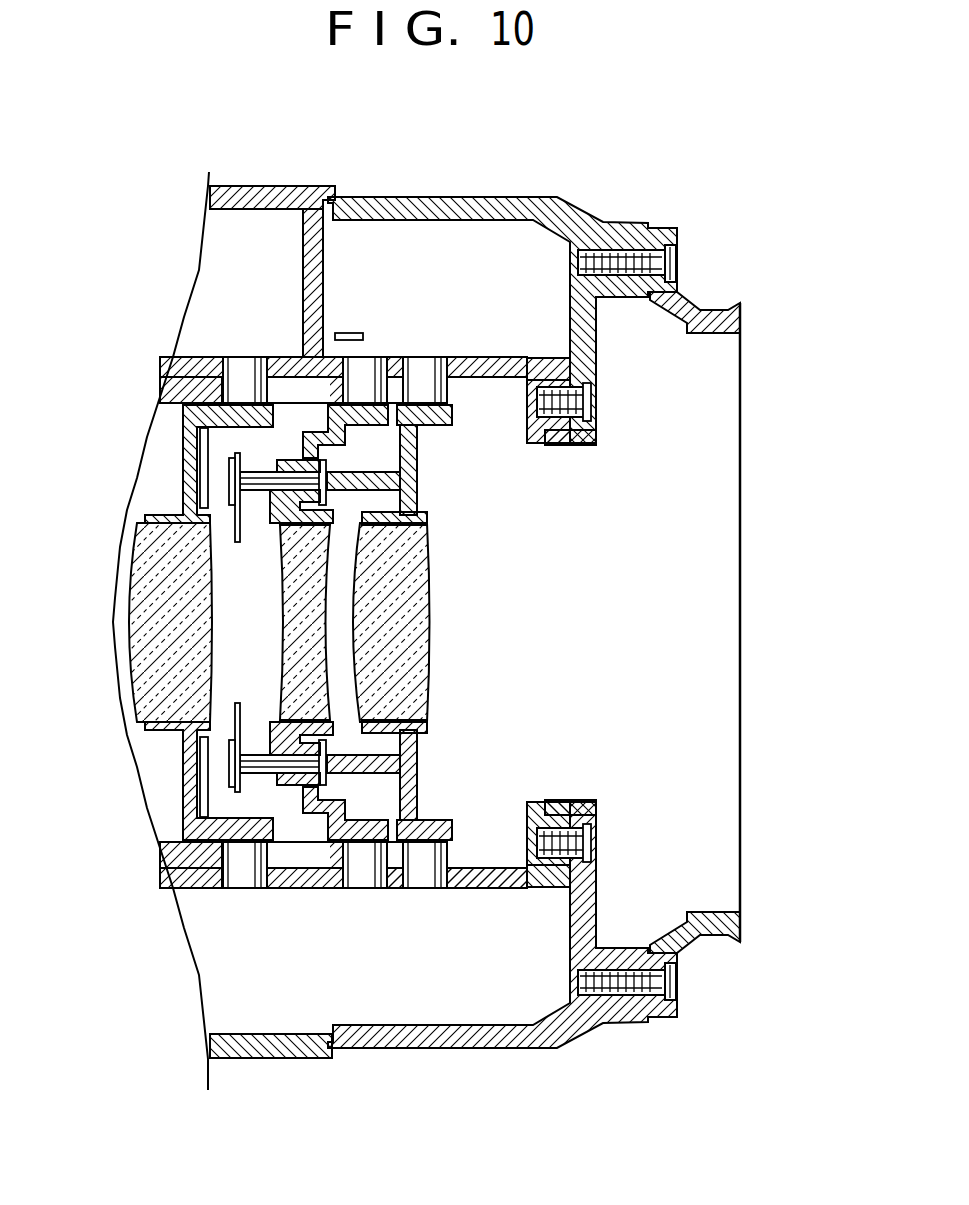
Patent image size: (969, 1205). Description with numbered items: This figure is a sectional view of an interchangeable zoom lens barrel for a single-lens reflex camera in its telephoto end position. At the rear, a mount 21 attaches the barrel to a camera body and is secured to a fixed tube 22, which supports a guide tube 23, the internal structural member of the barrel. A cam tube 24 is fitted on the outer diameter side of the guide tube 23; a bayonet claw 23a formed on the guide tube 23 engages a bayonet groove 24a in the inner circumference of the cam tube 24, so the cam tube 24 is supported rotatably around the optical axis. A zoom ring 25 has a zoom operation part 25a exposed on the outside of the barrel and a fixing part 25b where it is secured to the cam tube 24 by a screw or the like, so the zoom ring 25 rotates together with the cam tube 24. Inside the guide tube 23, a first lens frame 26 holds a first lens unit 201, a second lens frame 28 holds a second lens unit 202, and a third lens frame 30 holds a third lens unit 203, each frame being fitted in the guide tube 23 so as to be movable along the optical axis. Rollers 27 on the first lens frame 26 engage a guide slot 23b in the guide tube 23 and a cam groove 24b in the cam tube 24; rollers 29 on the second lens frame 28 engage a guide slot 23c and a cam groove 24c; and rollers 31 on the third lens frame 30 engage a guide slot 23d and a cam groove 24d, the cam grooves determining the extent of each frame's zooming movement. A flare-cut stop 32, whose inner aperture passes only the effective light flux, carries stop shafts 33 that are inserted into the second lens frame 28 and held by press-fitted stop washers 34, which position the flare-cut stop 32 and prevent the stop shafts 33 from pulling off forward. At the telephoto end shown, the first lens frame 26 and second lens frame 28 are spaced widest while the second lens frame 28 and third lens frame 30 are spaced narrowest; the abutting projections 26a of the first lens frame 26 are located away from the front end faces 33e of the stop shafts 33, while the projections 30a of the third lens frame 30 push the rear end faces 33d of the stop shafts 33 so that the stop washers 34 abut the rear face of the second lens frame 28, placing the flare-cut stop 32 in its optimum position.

The mount 21 is at (698, 292).
The fixed tube 22 is at (485, 205).
The guide tube 23 is at (178, 390).
The bayonet claw 23a is at (548, 365).
The guide slot 23b is at (185, 855).
The guide slot 23c is at (273, 887).
The guide slot 23d is at (345, 887).
The cam tube 24 is at (178, 368).
The bayonet groove 24a is at (540, 372).
The cam groove 24b is at (185, 878).
The cam groove 24c is at (312, 887).
The cam groove 24d is at (372, 887).
The zoom ring 25 is at (243, 197).
The zoom operation part 25a is at (297, 187).
The fixing part 25b is at (378, 345).
The first lens frame 26 is at (188, 460).
The abutting projections 26a is at (203, 487).
The rollers 27 is at (245, 372).
The second lens frame 28 is at (405, 502).
The rollers 29 is at (385, 365).
The third lens frame 30 is at (450, 413).
The projections 30a is at (410, 512).
The rollers 31 is at (428, 368).
The flare-cut stop 32 is at (236, 540).
The stop shafts 33 is at (183, 778).
The rear end faces 33d is at (405, 795).
The front end faces 33e is at (207, 752).
The stop washers 34 is at (405, 735).
The first lens unit 201 is at (157, 585).
The second lens unit 202 is at (300, 638).
The third lens unit 203 is at (430, 582).